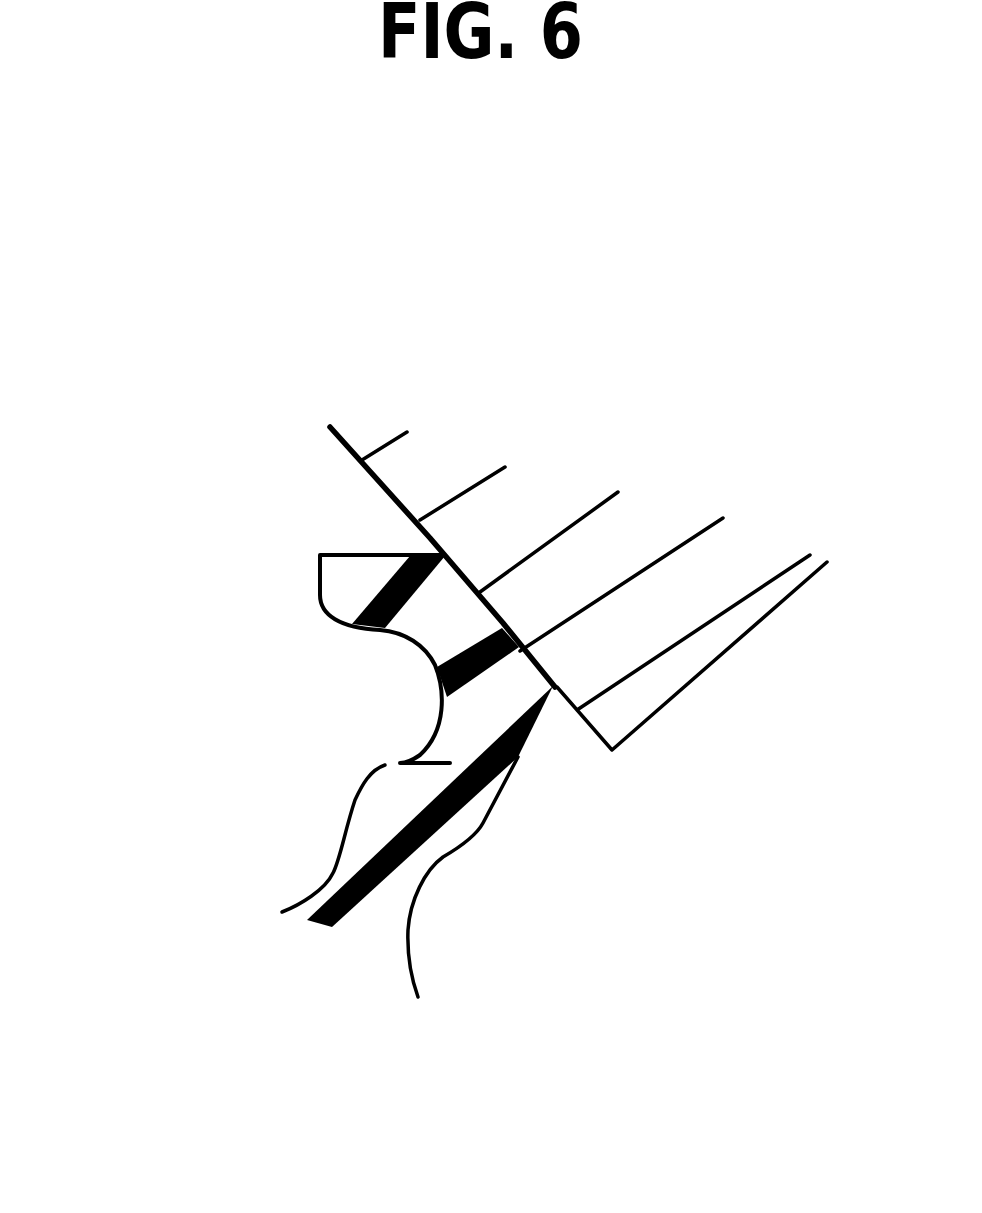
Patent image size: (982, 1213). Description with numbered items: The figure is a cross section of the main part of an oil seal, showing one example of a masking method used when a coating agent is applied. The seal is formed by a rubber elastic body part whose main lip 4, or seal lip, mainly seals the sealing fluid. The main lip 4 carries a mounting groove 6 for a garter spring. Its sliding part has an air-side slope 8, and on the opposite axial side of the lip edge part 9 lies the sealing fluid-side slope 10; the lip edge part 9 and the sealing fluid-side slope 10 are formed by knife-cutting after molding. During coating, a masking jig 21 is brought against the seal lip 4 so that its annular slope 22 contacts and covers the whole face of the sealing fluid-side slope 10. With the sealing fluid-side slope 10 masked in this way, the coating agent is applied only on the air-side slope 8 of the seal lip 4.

The sealing fluid-side slope 10 is at (487, 603).
The masking jig 21 is at (633, 537).
The lip edge part 9 is at (557, 687).
The mounting groove 6 is at (415, 642).
The annular slope 22 is at (528, 648).
The main lip 4 is at (450, 763).
The air-side slope 8 is at (557, 683).